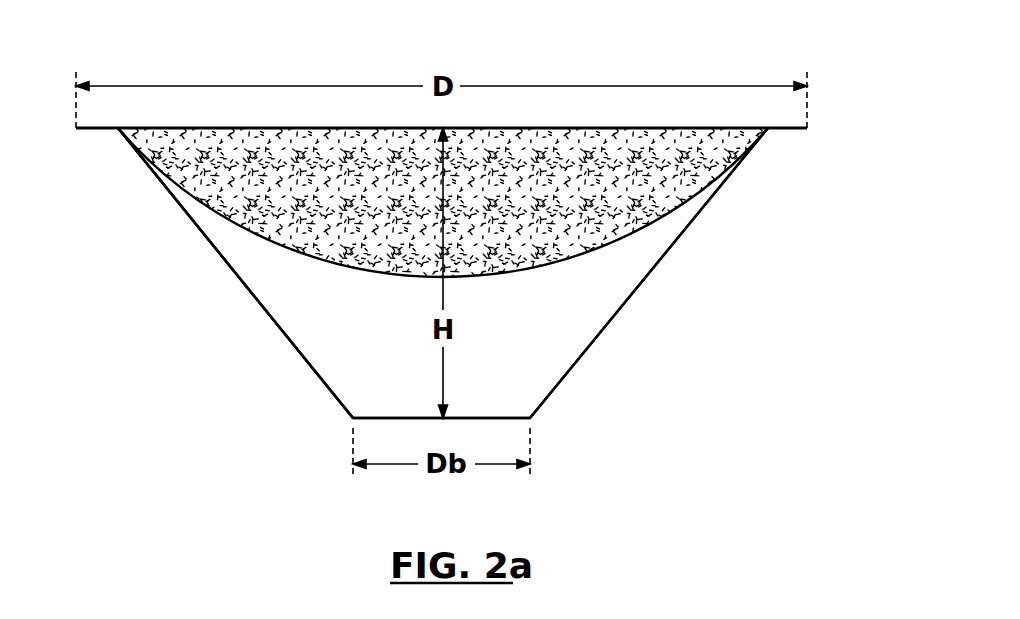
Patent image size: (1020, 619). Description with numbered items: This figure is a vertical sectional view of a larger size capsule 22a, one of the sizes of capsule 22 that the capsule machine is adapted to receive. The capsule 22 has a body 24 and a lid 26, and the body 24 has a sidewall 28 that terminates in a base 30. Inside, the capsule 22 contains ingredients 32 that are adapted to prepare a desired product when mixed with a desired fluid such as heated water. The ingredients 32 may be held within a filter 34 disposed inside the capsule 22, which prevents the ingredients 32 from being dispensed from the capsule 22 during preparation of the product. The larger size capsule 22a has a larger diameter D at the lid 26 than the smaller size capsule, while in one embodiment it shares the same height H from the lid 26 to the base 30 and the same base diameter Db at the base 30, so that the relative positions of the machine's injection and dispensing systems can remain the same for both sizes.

The capsule 22 is at (750, 195).
The larger size capsule 22a is at (638, 346).
The body 24 is at (162, 268).
The lid 26 is at (221, 131).
The sidewall 28 is at (301, 357).
The base 30 is at (498, 418).
The ingredients 32 is at (544, 190).
The filter 34 is at (625, 237).